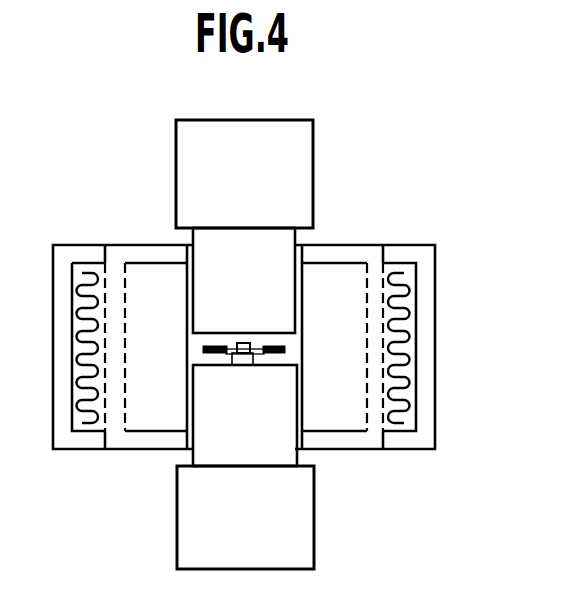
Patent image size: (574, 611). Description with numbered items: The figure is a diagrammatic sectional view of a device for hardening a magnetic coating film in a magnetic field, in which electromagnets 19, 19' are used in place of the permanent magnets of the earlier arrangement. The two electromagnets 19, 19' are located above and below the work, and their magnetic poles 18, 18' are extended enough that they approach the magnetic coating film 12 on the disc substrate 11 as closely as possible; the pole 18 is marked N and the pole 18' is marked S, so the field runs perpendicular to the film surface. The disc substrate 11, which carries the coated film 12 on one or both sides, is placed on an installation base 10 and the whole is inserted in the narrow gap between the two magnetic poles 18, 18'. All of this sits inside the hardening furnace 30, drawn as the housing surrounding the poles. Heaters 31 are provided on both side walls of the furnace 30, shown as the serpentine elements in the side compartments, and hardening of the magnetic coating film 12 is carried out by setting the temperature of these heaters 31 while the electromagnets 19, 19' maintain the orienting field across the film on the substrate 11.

The installation base 10 is at (233, 360).
The disc substrate 11 is at (222, 345).
The magnetic coating film 12 is at (204, 349).
The magnetic pole 18 is at (277, 271).
The magnetic pole 18' is at (281, 430).
The electromagnet 19 is at (269, 174).
The electromagnet 19' is at (273, 517).
The hardening furnace 30 is at (436, 364).
The heater 31 is at (407, 321).